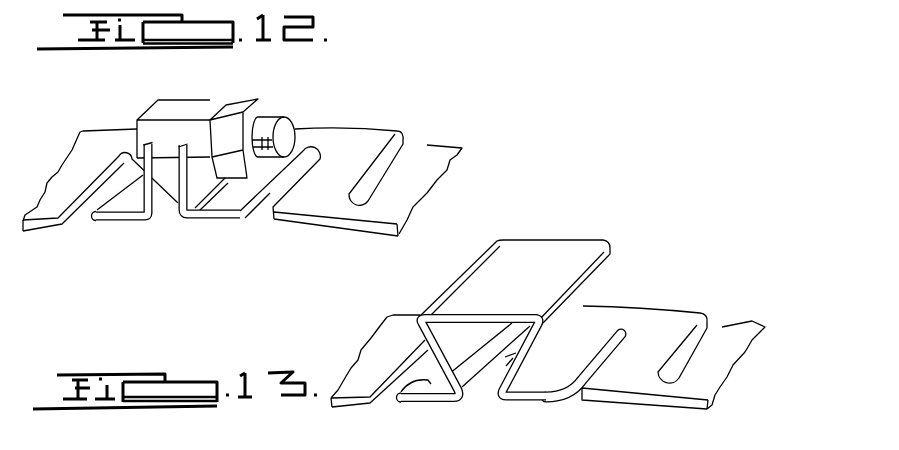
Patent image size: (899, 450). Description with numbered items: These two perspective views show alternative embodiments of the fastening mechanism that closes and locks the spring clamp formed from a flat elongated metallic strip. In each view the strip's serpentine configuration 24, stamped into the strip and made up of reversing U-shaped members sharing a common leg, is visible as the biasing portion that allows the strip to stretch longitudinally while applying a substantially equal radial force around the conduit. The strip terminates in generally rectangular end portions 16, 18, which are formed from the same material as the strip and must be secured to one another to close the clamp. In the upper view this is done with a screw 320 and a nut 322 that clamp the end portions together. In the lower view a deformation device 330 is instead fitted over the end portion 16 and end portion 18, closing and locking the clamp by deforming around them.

In FIG. 12, the nut 322 is at (251, 98).
In FIG. 12, the screw 320 is at (288, 130).
In FIG. 12, the serpentine configuration 24 is at (438, 144).
In FIG. 13, the serpentine configuration 24 is at (737, 318).
In FIG. 13, the deformation device 330 is at (513, 247).
In FIG. 13, the end portion 18 is at (597, 320).
In FIG. 13, the end portion 16 is at (400, 406).